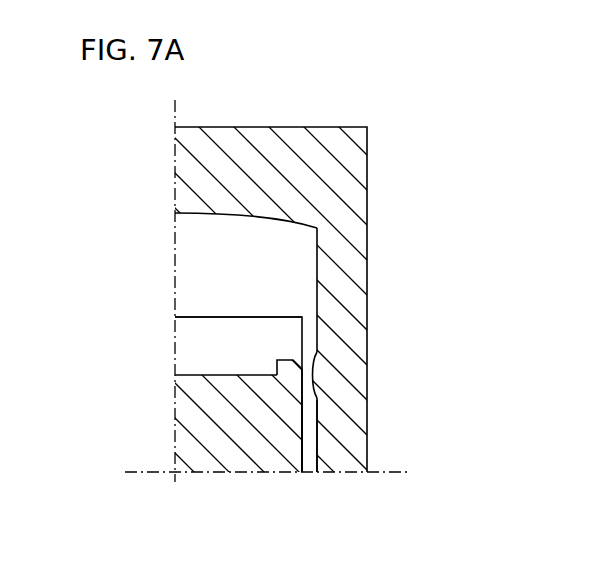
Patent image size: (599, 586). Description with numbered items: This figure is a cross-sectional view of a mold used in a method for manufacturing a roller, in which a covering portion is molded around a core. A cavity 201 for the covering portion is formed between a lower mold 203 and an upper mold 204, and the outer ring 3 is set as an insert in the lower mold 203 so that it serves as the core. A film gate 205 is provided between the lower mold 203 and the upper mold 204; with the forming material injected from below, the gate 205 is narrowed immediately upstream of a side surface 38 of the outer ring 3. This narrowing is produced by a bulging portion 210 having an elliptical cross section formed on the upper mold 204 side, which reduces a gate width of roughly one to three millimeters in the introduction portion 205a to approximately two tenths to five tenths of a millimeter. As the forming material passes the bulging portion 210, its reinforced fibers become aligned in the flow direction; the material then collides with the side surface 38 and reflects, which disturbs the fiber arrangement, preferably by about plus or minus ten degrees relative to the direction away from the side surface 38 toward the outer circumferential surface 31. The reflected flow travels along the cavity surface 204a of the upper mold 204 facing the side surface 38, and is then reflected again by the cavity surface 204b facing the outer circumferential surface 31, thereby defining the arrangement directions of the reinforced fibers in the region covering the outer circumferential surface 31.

The cavity 201 is at (186, 223).
The upper mold 204 is at (292, 127).
The cavity surface 204a is at (317, 265).
The cavity surface 204b is at (260, 218).
The bulging portion 210 is at (316, 377).
The outer ring 3 is at (202, 357).
The outer circumferential surface 31 is at (202, 317).
The side surface 38 is at (300, 334).
The lower mold 203 is at (181, 405).
The film gate 205 is at (308, 440).
The introduction portion 205a is at (308, 474).